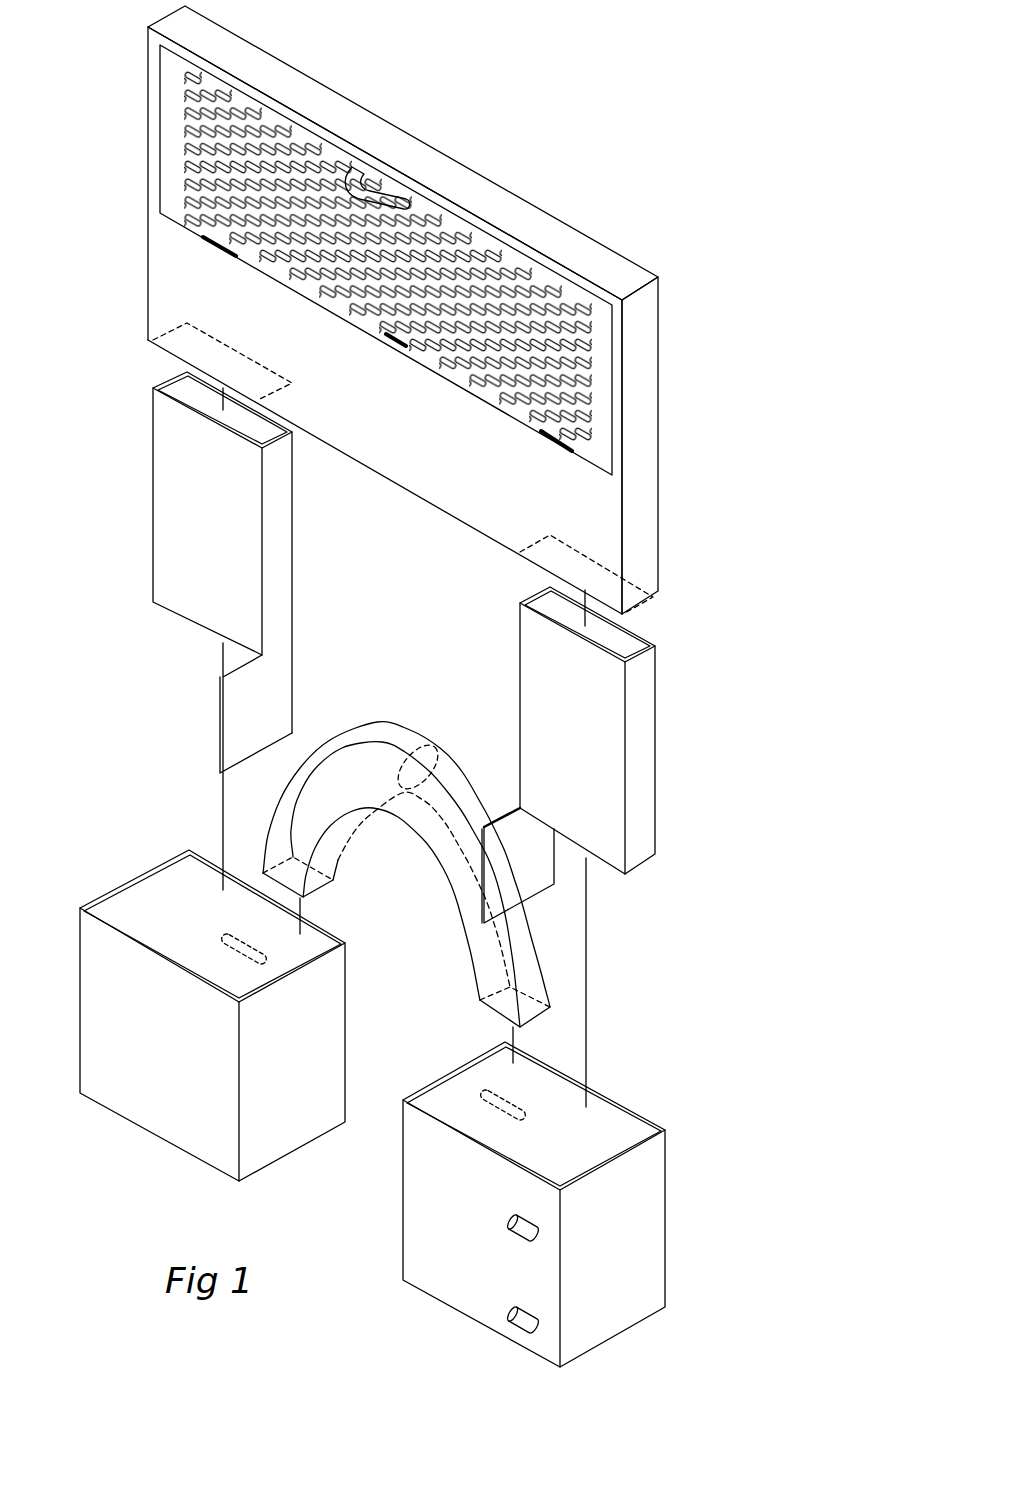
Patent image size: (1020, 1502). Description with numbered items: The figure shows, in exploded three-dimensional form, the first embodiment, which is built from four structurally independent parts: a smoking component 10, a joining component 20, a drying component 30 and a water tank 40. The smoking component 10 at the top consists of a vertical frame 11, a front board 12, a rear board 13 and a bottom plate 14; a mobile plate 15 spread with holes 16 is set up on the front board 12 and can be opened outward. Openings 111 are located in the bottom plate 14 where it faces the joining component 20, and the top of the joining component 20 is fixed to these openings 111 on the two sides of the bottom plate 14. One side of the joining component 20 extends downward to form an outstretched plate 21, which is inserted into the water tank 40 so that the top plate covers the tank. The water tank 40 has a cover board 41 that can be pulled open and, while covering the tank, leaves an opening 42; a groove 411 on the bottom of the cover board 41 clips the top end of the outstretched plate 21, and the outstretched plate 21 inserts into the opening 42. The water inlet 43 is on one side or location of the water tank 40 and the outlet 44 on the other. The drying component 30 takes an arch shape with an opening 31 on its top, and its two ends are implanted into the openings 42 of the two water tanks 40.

The smoking component 10 is at (408, 316).
The vertical frame 11 is at (432, 156).
The front board 12 is at (162, 266).
The rear board 13 is at (655, 421).
The bottom plate 14 is at (400, 490).
The mobile plate 15 is at (167, 167).
The holes 16 is at (316, 148).
The openings 111 is at (618, 572).
The joining component 20 is at (601, 847).
The outstretched plate 21 is at (541, 877).
The drying component 30 is at (406, 853).
The opening 31 is at (430, 757).
The water tank 40 is at (561, 1183).
The cover board 41 is at (437, 1097).
The opening 42 is at (627, 1128).
The groove 411 is at (505, 1098).
The water inlet 43 is at (518, 1220).
The outlet 44 is at (522, 1310).